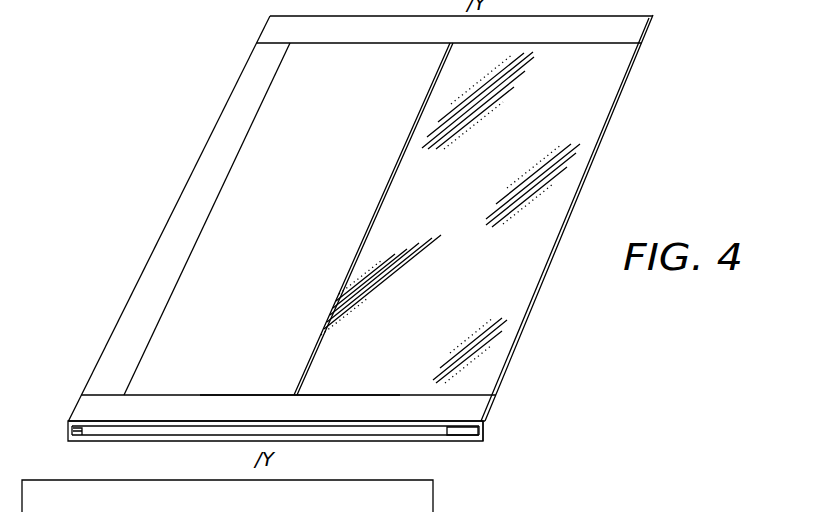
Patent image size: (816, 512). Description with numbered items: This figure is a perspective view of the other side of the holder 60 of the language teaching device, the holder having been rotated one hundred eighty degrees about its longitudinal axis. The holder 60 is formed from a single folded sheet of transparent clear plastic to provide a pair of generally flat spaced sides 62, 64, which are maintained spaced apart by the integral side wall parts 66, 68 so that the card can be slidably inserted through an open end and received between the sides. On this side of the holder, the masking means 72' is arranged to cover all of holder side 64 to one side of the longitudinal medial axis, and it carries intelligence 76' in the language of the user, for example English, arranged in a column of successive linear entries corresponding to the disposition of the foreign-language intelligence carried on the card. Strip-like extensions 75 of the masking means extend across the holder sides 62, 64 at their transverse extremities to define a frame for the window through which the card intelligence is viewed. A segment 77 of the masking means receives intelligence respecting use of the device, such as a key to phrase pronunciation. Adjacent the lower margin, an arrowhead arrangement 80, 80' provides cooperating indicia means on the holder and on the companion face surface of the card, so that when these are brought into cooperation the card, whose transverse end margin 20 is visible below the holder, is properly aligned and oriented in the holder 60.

The holder 60 is at (129, 298).
The strip-like extensions 75 is at (634, 30).
The intelligence 76' is at (288, 219).
The masking means 72' is at (319, 121).
The segment of masking means 77 is at (252, 88).
The arrowhead arrangement 80 is at (300, 378).
The holder side 62 is at (385, 438).
The side wall part 68 is at (70, 430).
The side wall part 66 is at (498, 425).
The holder side 64 is at (447, 437).
The transverse end margin 20 is at (361, 479).
The arrowhead arrangement 80' is at (233, 501).